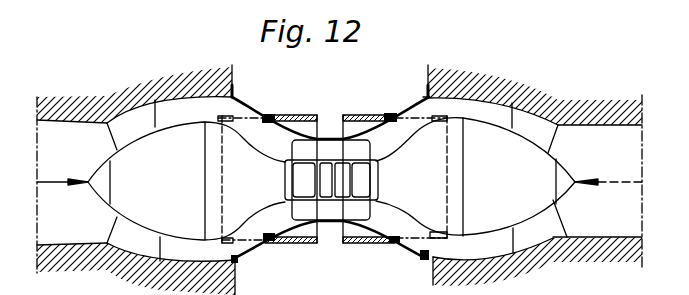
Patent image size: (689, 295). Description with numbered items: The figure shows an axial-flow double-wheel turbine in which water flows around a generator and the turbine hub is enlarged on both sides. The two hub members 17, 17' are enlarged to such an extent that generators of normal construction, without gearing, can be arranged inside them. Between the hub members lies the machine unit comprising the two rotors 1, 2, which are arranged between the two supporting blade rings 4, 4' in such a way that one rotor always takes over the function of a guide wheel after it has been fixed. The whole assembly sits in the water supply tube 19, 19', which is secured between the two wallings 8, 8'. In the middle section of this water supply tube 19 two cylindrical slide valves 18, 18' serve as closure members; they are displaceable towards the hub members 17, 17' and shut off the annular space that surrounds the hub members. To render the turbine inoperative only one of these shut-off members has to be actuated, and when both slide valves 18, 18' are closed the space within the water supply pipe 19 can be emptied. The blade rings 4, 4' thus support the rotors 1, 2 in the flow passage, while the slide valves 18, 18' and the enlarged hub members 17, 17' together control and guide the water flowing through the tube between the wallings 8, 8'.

The rotor 1 is at (331, 180).
The rotor 2 is at (331, 180).
The supporting blade ring 4 is at (171, 179).
The supporting blade ring 4' is at (497, 179).
The walling 8 is at (243, 81).
The walling 8' is at (441, 78).
The hub member 17 is at (186, 179).
The hub member 17' is at (475, 177).
The cylindrical slide valve 18 is at (267, 117).
The cylindrical slide valve 18' is at (395, 116).
The water supply tube 19 is at (269, 246).
The clamping strip 19' is at (395, 246).